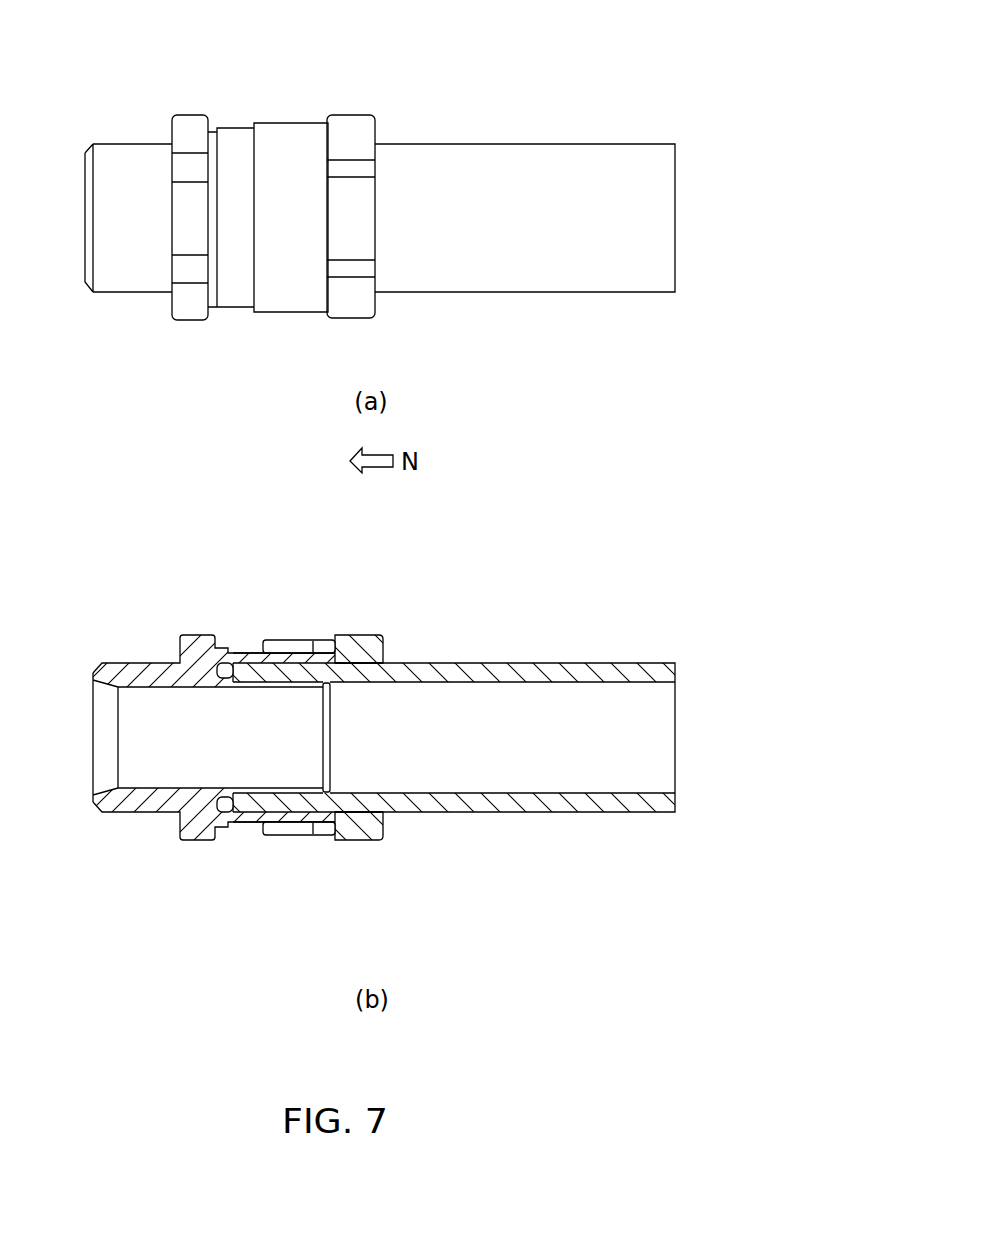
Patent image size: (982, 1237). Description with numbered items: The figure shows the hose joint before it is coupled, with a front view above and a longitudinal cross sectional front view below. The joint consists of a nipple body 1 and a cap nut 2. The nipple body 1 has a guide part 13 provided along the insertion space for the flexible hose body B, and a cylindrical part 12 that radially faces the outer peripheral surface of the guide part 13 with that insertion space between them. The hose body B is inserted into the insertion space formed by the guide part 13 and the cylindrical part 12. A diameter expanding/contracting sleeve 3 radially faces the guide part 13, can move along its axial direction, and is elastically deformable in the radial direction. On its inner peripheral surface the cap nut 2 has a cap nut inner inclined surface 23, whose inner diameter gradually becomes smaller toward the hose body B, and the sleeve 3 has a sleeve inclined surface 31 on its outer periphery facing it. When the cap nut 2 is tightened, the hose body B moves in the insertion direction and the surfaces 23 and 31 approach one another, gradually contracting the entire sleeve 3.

The nipple body 1 is at (138, 198).
The cap nut 2 is at (307, 183).
The diameter expanding/contracting sleeve 3 is at (298, 642).
The cylindrical part 12 is at (260, 650).
The guide part 13 is at (228, 657).
The cap nut inner inclined surface 23 is at (352, 807).
The sleeve inclined surface 31 is at (313, 652).
The hose body B is at (510, 177).